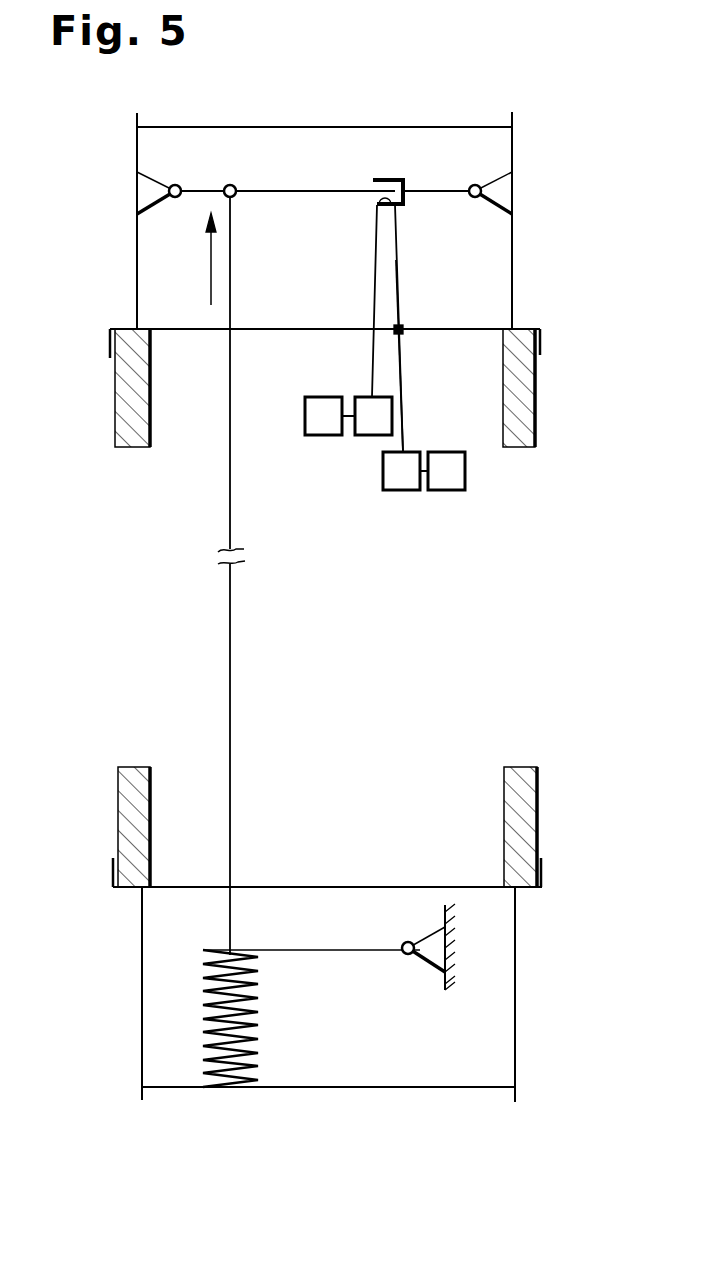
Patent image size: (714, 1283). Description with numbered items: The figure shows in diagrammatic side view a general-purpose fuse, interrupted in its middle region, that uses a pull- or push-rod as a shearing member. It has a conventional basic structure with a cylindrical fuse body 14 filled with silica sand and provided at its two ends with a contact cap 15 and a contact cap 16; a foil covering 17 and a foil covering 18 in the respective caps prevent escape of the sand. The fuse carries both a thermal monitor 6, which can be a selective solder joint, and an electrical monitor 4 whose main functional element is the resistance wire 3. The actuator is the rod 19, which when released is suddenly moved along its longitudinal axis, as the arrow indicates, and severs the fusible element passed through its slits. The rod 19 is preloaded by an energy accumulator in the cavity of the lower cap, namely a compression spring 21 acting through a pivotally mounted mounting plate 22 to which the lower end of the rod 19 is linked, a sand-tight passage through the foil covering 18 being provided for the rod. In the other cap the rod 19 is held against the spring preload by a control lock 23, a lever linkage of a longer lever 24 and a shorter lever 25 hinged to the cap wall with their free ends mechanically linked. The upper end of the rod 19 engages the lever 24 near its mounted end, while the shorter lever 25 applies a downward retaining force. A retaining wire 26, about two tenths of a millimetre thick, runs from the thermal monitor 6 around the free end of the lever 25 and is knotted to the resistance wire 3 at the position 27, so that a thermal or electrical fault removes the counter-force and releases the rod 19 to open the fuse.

The resistance wire 3 is at (403, 420).
The electrical monitor 4 is at (403, 492).
The thermal monitor 6 is at (368, 433).
The fuse body 14 is at (527, 415).
The contact cap 15 is at (410, 138).
The contact cap 16 is at (485, 1045).
The foil covering 17 is at (197, 333).
The foil covering 18 is at (415, 885).
The pull- or push-rod 19 is at (229, 637).
The compression spring 21 is at (258, 1020).
The mounting plate 22 is at (345, 953).
The control lock 23 is at (248, 176).
The longer lever 24 is at (308, 190).
The shorter lever 25 is at (442, 189).
The retaining wire 26 is at (397, 250).
The position 27 is at (405, 326).